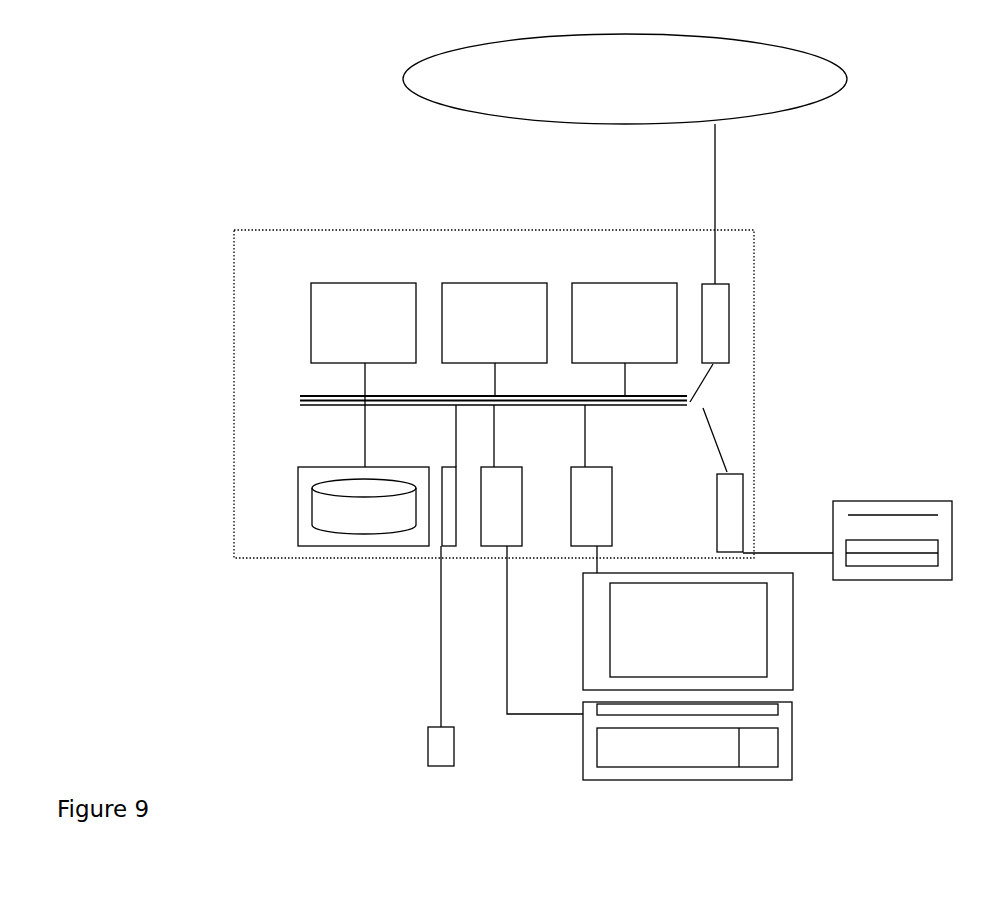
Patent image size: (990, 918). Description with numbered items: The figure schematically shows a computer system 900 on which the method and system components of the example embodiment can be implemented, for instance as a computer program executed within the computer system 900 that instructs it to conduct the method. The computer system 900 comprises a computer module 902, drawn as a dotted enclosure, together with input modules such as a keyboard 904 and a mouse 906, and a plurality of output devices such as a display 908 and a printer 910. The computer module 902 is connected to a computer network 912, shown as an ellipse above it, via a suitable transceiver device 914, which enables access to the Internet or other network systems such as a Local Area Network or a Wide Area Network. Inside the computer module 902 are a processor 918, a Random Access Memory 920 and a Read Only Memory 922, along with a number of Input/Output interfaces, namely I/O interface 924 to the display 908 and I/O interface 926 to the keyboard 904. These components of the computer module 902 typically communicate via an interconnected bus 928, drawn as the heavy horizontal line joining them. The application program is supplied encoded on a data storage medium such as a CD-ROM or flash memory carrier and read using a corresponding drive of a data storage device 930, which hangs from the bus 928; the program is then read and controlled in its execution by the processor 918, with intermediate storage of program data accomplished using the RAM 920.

The computer system 900 is at (298, 823).
The computer module 902 is at (769, 383).
The keyboard 904 is at (720, 785).
The mouse 906 is at (458, 772).
The display 908 is at (807, 683).
The printer 910 is at (845, 500).
The computer network 912 is at (745, 42).
The transceiver device 914 is at (744, 317).
The processor 918 is at (602, 292).
The Random Access Memory (RAM) 920 is at (355, 292).
The Read Only Memory (ROM) 922 is at (487, 292).
The I/O interface 924 is at (585, 552).
The I/O interface 926 is at (508, 552).
The interconnected bus 928 is at (315, 409).
The data storage device 930 is at (325, 552).